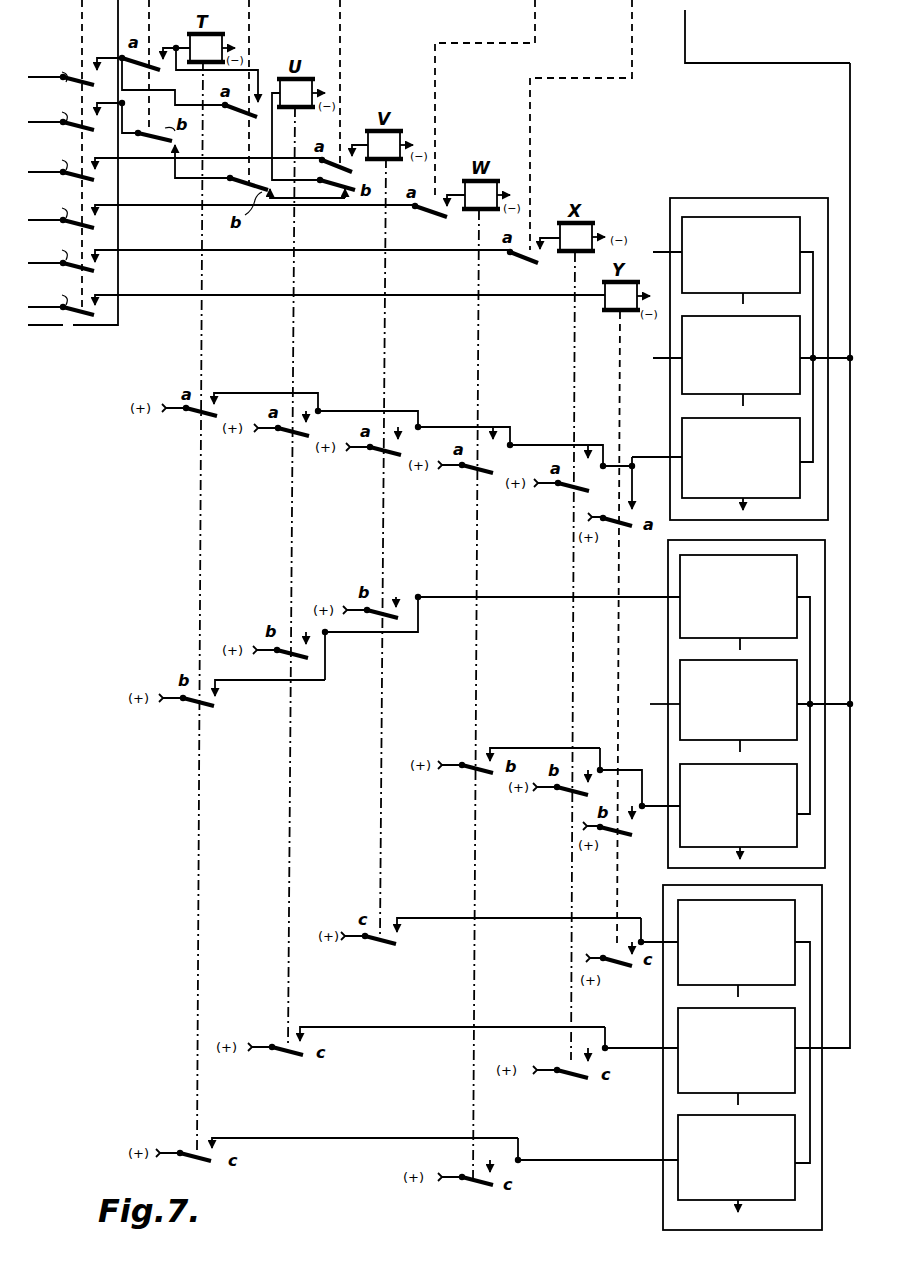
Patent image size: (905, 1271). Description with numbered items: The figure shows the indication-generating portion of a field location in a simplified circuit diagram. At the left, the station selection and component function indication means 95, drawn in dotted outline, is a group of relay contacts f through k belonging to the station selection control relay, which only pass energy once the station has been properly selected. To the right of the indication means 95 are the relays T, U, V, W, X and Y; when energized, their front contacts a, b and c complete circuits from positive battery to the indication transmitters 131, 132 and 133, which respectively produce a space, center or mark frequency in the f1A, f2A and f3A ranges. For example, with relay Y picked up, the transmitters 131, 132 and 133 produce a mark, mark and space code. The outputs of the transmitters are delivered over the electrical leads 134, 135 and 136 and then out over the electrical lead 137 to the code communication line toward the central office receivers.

The station selection and component function indication means 95 is at (118, 320).
The indication transmitter 131 is at (726, 185).
The indication transmitter 132 is at (802, 528).
The indication transmitter 133 is at (665, 886).
The electrical lead 134 is at (818, 362).
The electrical lead 135 is at (815, 708).
The electrical lead 136 is at (832, 1052).
The electrical lead 137 is at (754, 50).